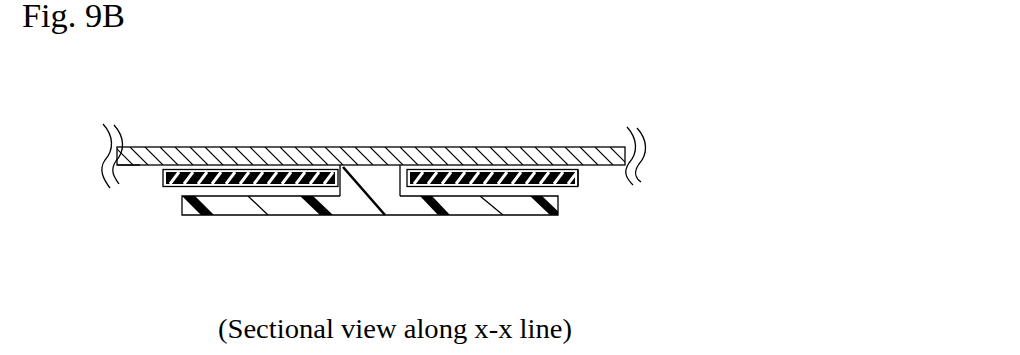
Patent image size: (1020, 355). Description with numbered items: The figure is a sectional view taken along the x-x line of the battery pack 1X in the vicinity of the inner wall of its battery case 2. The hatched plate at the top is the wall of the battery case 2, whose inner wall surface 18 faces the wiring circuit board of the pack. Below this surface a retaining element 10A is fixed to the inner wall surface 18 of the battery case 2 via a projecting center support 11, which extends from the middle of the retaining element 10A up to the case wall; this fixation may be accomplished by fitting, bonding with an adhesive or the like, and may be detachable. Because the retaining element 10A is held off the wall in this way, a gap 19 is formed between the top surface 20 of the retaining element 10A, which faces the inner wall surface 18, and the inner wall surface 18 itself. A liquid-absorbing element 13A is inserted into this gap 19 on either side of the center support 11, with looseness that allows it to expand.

The battery pack 1X is at (138, 71).
The battery case 2 is at (457, 147).
The projecting center support 11 is at (374, 172).
The inner wall surface 18 is at (135, 168).
The top surface 20 is at (180, 187).
The gap 19 is at (546, 187).
The liquid-absorbing element 13A is at (579, 179).
The retaining element 10A is at (273, 215).